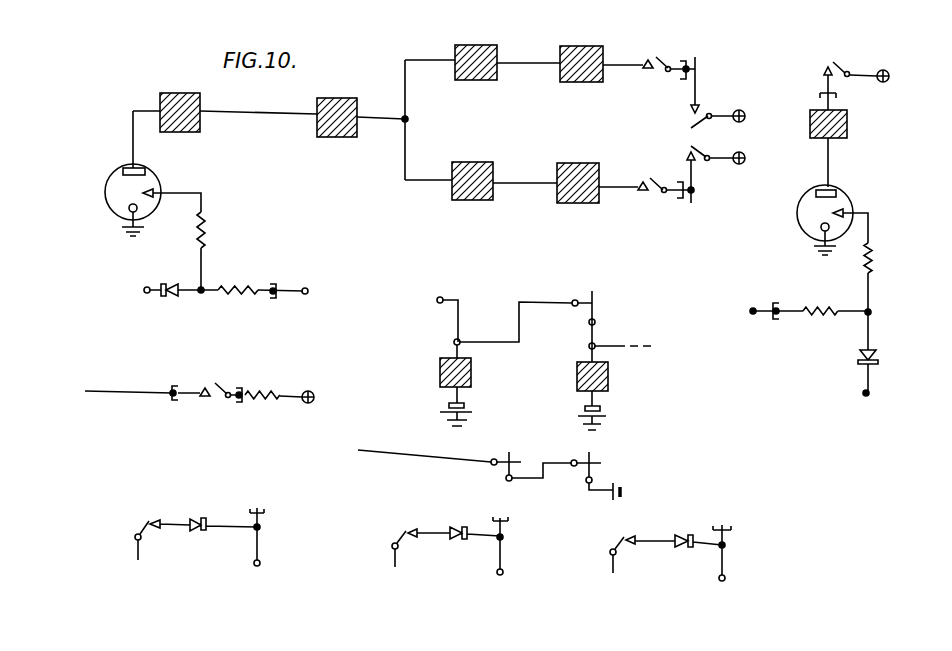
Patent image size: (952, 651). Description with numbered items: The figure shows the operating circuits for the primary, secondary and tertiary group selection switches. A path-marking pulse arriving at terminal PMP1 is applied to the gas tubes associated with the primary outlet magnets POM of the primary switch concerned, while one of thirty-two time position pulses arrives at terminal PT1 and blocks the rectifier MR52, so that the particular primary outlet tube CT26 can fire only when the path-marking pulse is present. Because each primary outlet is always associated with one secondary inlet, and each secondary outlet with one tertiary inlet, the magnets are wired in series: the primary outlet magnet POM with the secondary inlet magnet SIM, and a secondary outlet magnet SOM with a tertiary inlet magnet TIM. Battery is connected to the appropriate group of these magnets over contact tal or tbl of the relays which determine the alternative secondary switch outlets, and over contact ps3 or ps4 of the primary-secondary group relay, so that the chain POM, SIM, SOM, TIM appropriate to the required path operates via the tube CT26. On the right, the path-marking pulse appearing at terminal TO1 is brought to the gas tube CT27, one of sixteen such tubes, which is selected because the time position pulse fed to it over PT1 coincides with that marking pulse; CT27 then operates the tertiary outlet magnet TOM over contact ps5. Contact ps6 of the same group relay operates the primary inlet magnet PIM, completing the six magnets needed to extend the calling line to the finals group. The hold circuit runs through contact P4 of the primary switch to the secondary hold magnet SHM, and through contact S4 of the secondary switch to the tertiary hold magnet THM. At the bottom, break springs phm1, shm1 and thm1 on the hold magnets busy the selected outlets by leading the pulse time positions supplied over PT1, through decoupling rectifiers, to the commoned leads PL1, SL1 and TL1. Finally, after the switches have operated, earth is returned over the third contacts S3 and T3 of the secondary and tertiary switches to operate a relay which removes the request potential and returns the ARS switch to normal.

The primary outlet magnet POM is at (180, 103).
The secondary inlet magnet SIM is at (337, 128).
The secondary outlet magnet SOM is at (474, 134).
The tertiary inlet magnet TIM is at (580, 135).
The contact of primary-secondary group relay ps3 is at (669, 58).
The contact of primary-secondary group relay ps4 is at (663, 178).
The contact of primary-secondary group relay ps5 is at (856, 63).
The contact of primary-secondary group relay ps6 is at (254, 386).
The contact of relay TA tal is at (718, 97).
The contact of relay TB tbl is at (716, 174).
The tertiary outlet magnet TOM is at (846, 124).
The primary outlet tube CT26 is at (150, 200).
The gas tube CT27 is at (839, 214).
The terminal TO1 is at (751, 310).
The terminal PT1 is at (472, 434).
The blocking rectifier MR52 is at (166, 303).
The terminal PMP1 is at (321, 292).
The primary inlet magnet PIM is at (93, 386).
The contact four of primary switch P4 is at (433, 286).
The contact four of secondary switch S4 is at (583, 317).
The secondary hold magnet SHM is at (473, 382).
The tertiary hold magnet THM is at (610, 396).
The third contact of secondary switch S3 is at (435, 460).
The third contact of tertiary switch T3 is at (581, 462).
The break spring of primary hold magnet phm1 is at (196, 519).
The break spring of secondary hold magnet shm1 is at (446, 529).
The break spring of tertiary hold magnet thm1 is at (666, 536).
The commoned lead PL1 is at (255, 546).
The commoned lead SL1 is at (500, 556).
The commoned lead TL1 is at (717, 564).